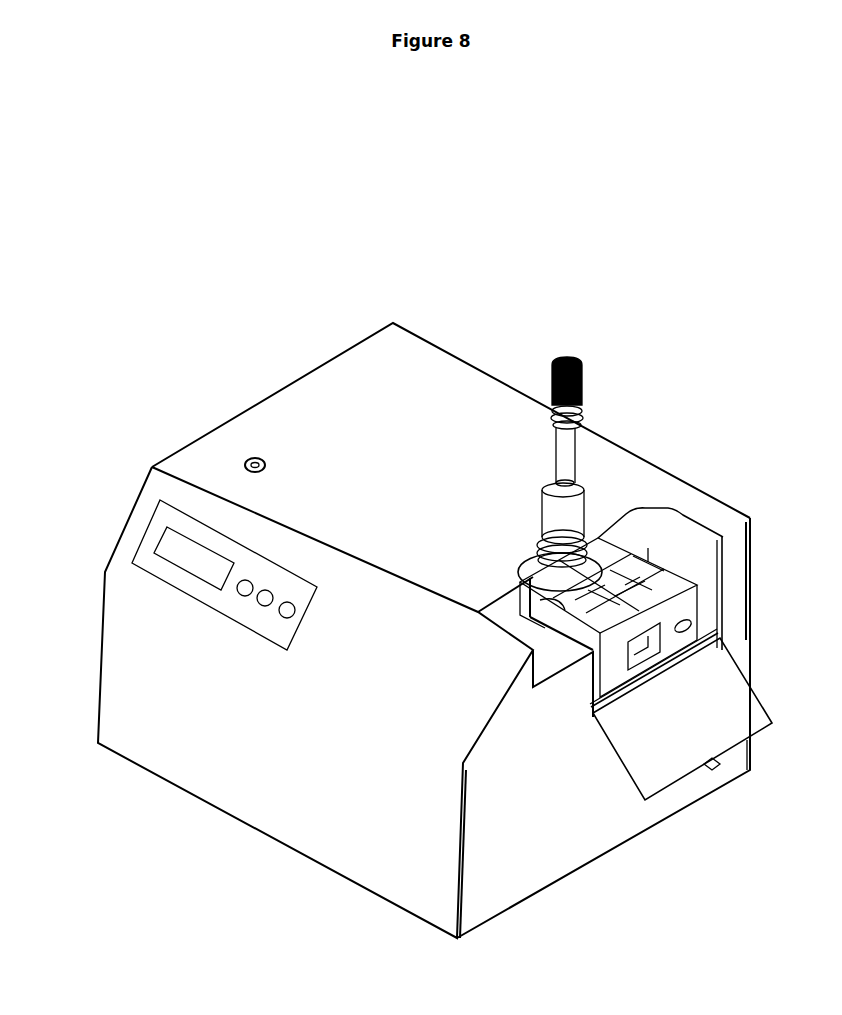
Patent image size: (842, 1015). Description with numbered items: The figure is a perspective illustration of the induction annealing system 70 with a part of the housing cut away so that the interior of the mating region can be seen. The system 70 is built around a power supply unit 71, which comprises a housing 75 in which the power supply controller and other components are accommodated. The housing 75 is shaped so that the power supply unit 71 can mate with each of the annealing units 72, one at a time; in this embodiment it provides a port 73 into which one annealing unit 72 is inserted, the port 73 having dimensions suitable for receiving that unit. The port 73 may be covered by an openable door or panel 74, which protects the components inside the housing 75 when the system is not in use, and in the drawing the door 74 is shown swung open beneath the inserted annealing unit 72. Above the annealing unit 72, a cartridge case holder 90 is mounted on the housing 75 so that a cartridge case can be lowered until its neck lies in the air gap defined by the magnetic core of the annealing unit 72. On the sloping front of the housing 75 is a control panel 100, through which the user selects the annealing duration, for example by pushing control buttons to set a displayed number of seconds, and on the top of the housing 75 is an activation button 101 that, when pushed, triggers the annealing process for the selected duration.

The system 70 is at (258, 220).
The power supply unit 71 is at (398, 368).
The annealing unit 72 is at (680, 607).
The port 73 is at (700, 613).
The door or panel 74 is at (673, 723).
The housing 75 is at (680, 480).
The cartridge case holder 90 is at (594, 470).
The control panel 100 is at (155, 548).
The activation button 101 is at (240, 458).